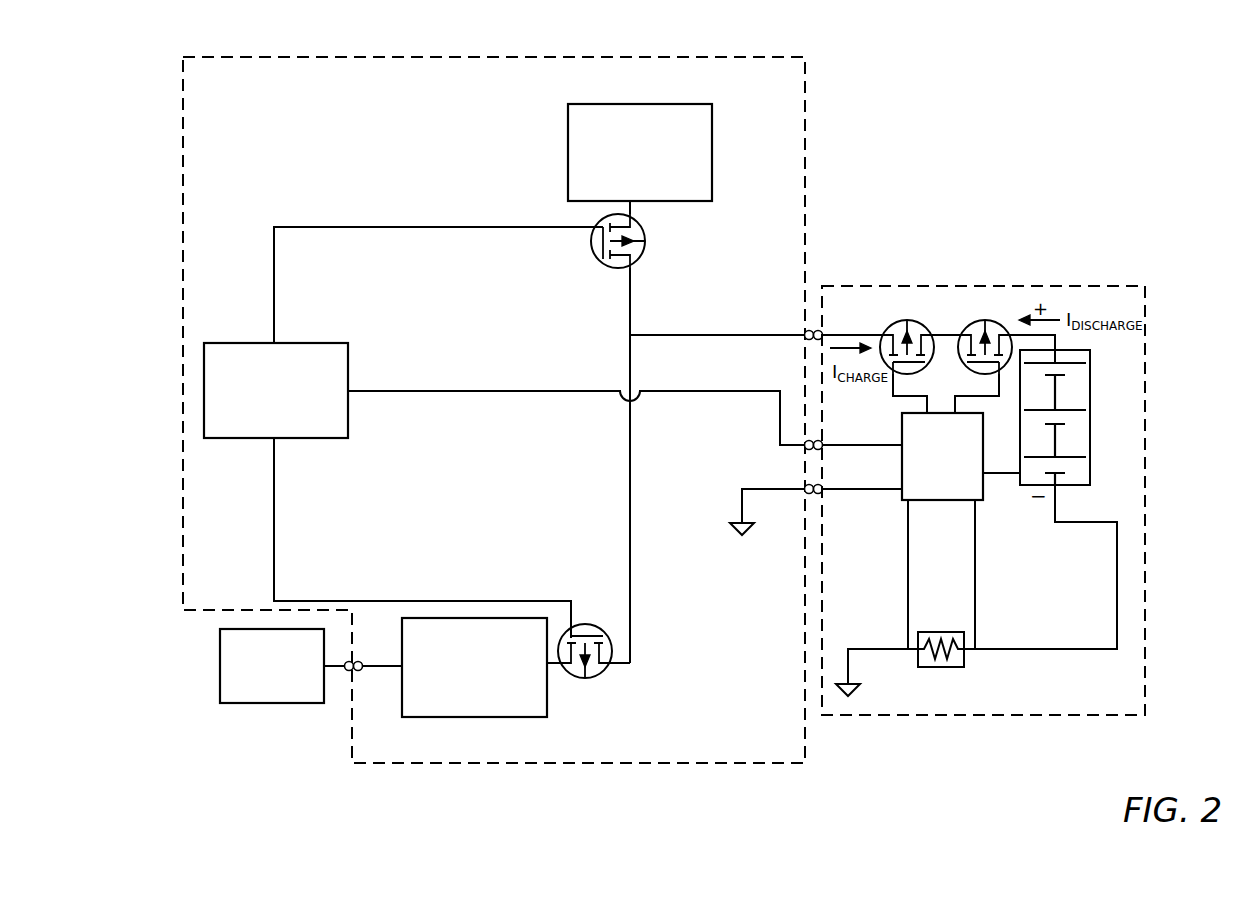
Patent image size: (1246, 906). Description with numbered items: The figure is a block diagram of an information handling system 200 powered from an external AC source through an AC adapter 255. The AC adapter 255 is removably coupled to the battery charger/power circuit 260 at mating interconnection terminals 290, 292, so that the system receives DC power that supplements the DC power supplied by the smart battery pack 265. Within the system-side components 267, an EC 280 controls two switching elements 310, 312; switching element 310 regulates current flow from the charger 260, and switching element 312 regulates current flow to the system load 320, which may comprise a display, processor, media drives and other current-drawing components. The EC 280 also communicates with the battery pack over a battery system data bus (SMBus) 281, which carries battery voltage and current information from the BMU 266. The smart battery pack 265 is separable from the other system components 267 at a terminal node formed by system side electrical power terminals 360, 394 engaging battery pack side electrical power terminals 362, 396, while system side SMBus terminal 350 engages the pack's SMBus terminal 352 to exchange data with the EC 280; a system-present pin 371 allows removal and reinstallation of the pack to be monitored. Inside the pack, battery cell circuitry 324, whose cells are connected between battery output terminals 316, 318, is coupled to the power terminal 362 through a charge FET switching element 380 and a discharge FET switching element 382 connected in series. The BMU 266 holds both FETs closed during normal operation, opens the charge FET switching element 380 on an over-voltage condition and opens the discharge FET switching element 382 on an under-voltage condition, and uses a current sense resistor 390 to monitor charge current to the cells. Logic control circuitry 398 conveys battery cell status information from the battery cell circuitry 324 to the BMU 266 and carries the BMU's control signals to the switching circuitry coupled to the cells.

The information handling system 200 is at (1016, 86).
The AC adapter 255 is at (239, 705).
The battery charger/power circuit 260 is at (480, 718).
The smart battery pack 265 is at (1068, 286).
The BMU 266 is at (985, 452).
The other system components 267 is at (806, 158).
The EC 280 is at (318, 440).
The battery system data bus (SMBus) 281 is at (452, 389).
The mating interconnection terminal 290 is at (347, 660).
The mating interconnection terminal 292 is at (360, 660).
The switching element 310 is at (598, 673).
The switching element 312 is at (602, 268).
The battery output terminal 316 is at (1058, 338).
The battery output terminal 318 is at (1055, 521).
The system load 320 is at (567, 138).
The battery cell circuitry 324 is at (1082, 486).
The system side SMBus terminal 350 is at (806, 450).
The SMBus terminal 352 is at (821, 450).
The system side electrical power terminal 360 is at (806, 330).
The battery pack side electrical power terminal 362 is at (846, 323).
The system-present pin 371 is at (887, 491).
The charge FET switching element 380 is at (988, 376).
The discharge FET switching element 382 is at (905, 376).
The current sense resistor 390 is at (940, 668).
The system side electrical power terminal 394 is at (806, 494).
The battery pack side electrical power terminal 396 is at (821, 494).
The logic control circuitry 398 is at (1005, 477).